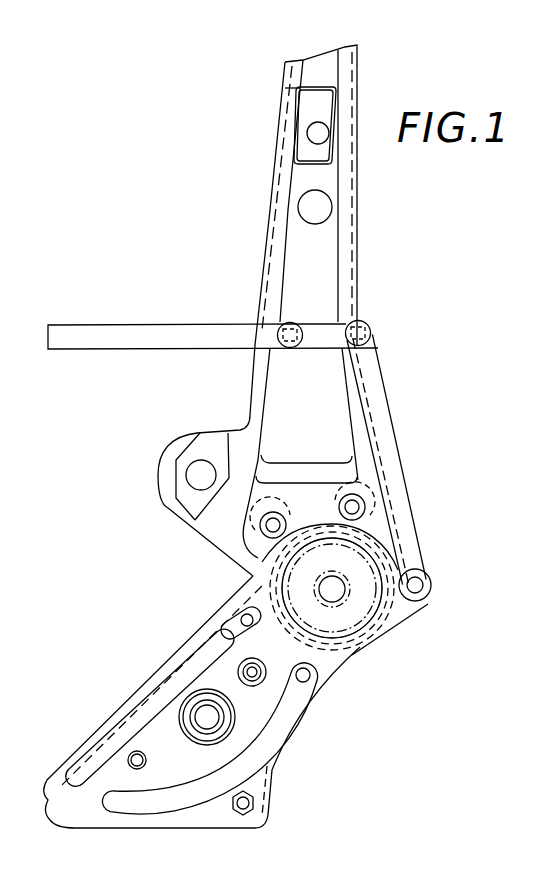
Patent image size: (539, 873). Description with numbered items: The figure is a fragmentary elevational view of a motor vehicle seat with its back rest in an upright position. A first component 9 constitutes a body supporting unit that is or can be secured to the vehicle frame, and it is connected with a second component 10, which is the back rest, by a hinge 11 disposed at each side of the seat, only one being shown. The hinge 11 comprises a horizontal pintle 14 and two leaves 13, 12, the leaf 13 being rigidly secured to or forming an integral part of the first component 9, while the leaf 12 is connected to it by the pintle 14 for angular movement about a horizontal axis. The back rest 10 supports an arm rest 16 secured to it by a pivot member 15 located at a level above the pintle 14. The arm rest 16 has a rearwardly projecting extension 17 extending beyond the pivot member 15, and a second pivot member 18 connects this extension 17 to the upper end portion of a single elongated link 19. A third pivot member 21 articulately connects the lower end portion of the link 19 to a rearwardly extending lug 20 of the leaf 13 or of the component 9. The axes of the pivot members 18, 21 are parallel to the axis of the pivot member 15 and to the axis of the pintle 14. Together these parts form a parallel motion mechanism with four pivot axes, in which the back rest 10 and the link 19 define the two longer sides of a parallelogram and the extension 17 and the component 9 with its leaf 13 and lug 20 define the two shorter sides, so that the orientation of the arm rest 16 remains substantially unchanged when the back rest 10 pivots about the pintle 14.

The first component 9 is at (105, 693).
The second component 10 is at (360, 266).
The hinge 11 is at (186, 585).
The leaf 12 is at (395, 506).
The leaf 13 is at (293, 722).
The pintle 14 is at (343, 600).
The pivot member 15 is at (282, 327).
The arm rest 16 is at (93, 335).
The rearwardly projecting extension 17 is at (325, 333).
The second pivot member 18 is at (372, 334).
The link 19 is at (386, 432).
The lug 20 is at (407, 603).
The third pivot member 21 is at (432, 591).